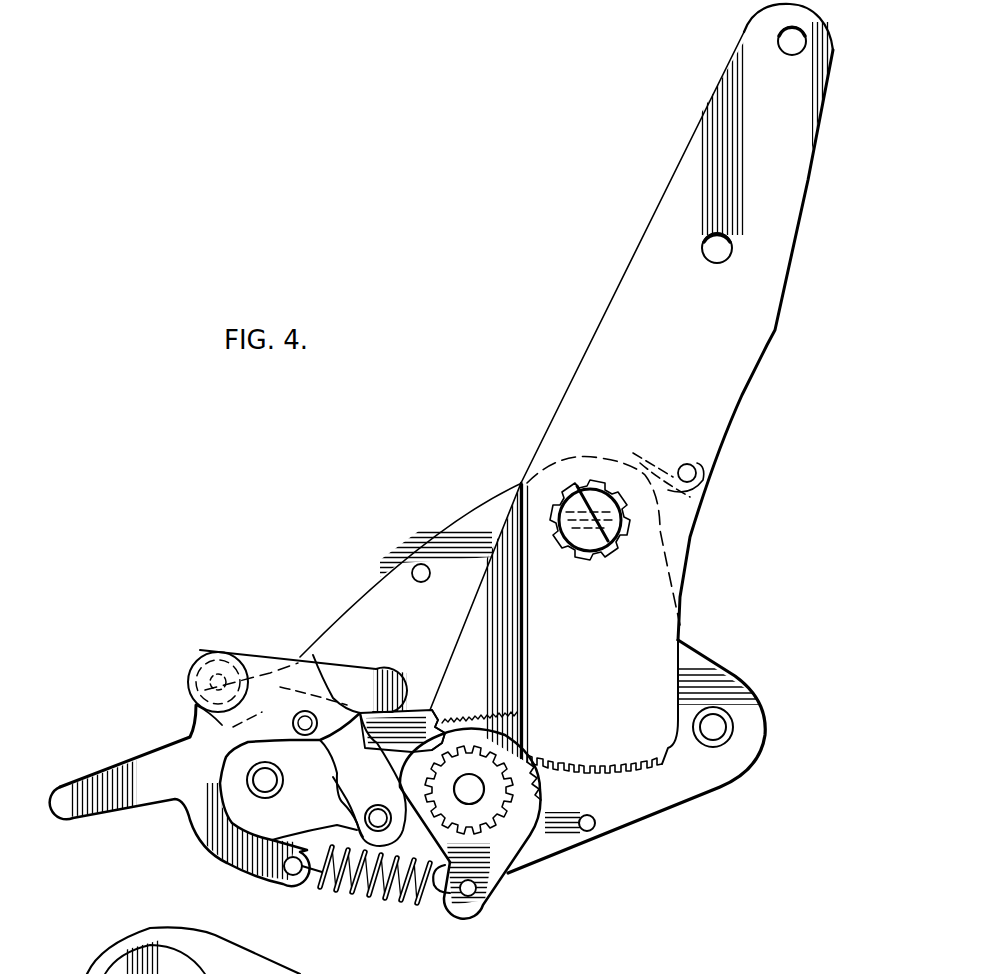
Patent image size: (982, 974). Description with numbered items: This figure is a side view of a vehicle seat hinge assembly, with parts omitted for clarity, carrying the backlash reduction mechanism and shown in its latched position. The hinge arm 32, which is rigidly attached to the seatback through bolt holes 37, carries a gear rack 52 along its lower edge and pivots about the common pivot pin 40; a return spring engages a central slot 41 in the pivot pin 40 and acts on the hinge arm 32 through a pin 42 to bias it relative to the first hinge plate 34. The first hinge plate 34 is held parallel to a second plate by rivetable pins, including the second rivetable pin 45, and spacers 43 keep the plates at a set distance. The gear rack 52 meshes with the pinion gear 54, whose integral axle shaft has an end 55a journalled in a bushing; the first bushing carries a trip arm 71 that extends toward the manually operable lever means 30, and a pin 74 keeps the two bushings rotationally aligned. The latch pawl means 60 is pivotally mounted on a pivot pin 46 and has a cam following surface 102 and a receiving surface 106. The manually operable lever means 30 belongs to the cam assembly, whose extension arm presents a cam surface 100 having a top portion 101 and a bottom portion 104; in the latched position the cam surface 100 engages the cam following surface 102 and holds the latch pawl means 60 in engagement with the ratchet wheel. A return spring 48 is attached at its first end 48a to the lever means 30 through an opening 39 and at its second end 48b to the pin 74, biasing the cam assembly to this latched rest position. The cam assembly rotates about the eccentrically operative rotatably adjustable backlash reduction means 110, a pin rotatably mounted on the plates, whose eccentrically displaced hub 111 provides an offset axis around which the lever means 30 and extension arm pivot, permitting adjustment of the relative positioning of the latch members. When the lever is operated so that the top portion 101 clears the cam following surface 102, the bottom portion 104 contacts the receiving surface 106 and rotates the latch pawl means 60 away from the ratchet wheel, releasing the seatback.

The manually operable lever means 30 is at (95, 820).
The hinge arm 32 is at (750, 352).
The first hinge plate 34 is at (713, 772).
The bolt holes 37 is at (793, 40).
The opening 39 is at (290, 872).
The pivot pin 40 is at (630, 507).
The central slot 41 is at (597, 537).
The pin 42 is at (683, 466).
The spacers 43 is at (733, 717).
The second rivetable pin 45 is at (430, 573).
The pivot pin 46 is at (365, 820).
The return spring 48 is at (366, 897).
The first end 48a is at (310, 874).
The second end 48b is at (437, 892).
The gear rack 52 is at (612, 790).
The pinion gear 54 is at (520, 878).
The other end of axle shaft 55a is at (480, 805).
The latch pawl means 60 is at (380, 798).
The trip arm 71 is at (397, 769).
The pin 74 is at (490, 903).
The cam surface 100 is at (306, 658).
The top portion of cam surface 101 is at (363, 688).
The cam following surface 102 is at (425, 715).
The bottom portion of cam surface 104 is at (276, 766).
The receiving surface 106 is at (326, 808).
The eccentrically operative rotatably adjustable backlash reduction means 110 is at (298, 714).
The eccentrically displaced hub 111 is at (222, 752).